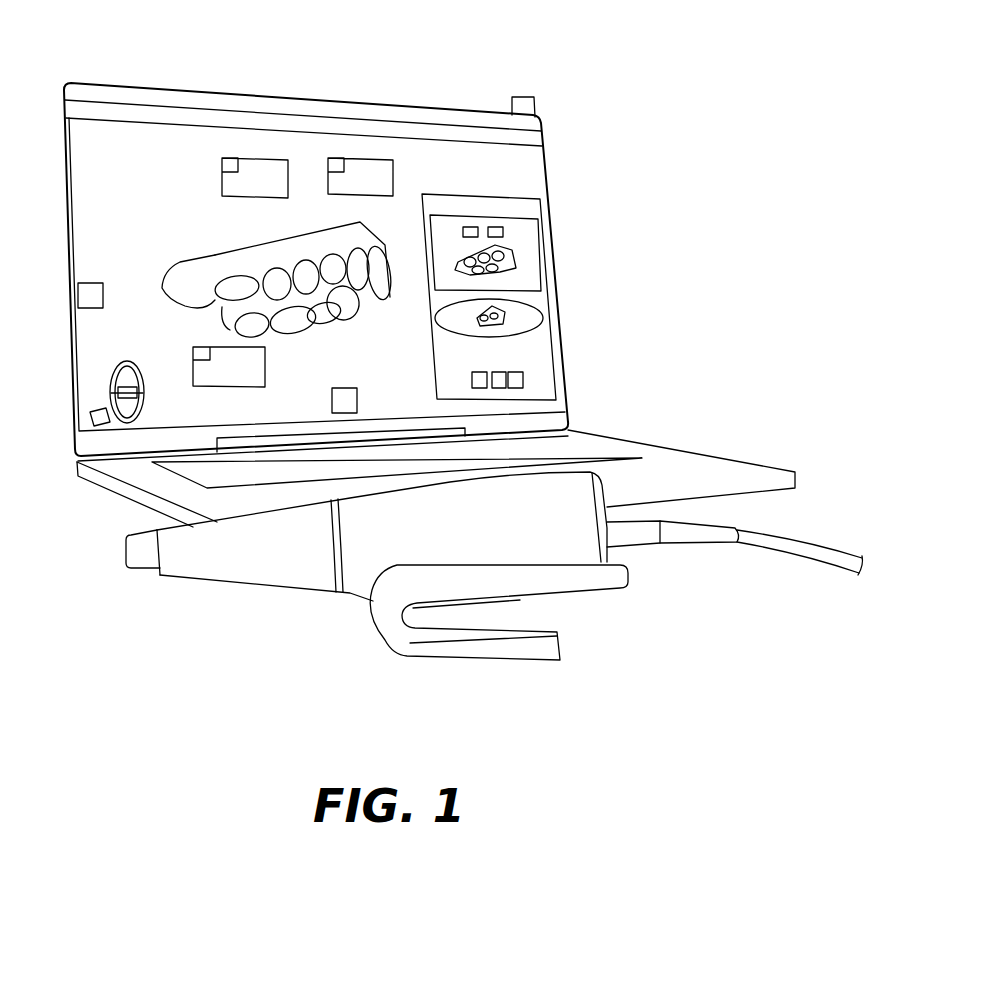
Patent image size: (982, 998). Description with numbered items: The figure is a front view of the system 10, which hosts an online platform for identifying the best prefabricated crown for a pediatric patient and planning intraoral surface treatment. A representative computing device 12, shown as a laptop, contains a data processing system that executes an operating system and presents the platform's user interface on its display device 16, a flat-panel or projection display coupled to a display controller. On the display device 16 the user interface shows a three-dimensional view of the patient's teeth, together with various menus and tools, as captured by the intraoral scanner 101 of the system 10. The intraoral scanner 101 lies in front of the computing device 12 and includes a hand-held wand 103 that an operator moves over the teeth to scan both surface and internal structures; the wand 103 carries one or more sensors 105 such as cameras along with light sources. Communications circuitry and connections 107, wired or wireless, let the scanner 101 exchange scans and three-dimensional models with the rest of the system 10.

The system 10 is at (727, 220).
The computing device 12 is at (533, 97).
The display device 16 is at (523, 170).
The intraoral scanner 101 is at (228, 557).
The wand 103 is at (318, 572).
The sensors 105 is at (140, 555).
The communications circuitry and connections 107 is at (688, 545).